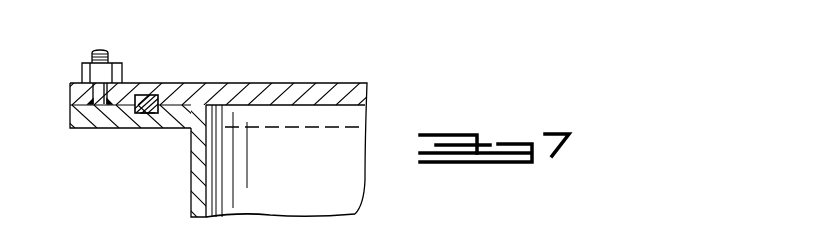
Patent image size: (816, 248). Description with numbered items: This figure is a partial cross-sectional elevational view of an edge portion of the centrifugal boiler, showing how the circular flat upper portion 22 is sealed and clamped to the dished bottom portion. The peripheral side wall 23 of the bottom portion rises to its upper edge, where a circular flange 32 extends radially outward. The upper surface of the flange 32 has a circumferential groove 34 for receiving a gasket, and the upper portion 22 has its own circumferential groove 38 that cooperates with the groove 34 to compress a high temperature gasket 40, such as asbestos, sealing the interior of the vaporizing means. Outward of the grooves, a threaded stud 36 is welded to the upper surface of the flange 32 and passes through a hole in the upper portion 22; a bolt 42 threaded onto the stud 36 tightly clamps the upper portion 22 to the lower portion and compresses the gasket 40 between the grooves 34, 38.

The upper portion 22 is at (252, 83).
The peripheral side wall 23 is at (191, 186).
The circular flange 32 is at (70, 129).
The circumferential groove 34 is at (132, 113).
The threaded stud 36 is at (97, 50).
The circumferential groove 38 is at (158, 100).
The high temperature gasket 40 is at (152, 113).
The bolt 42 is at (118, 67).